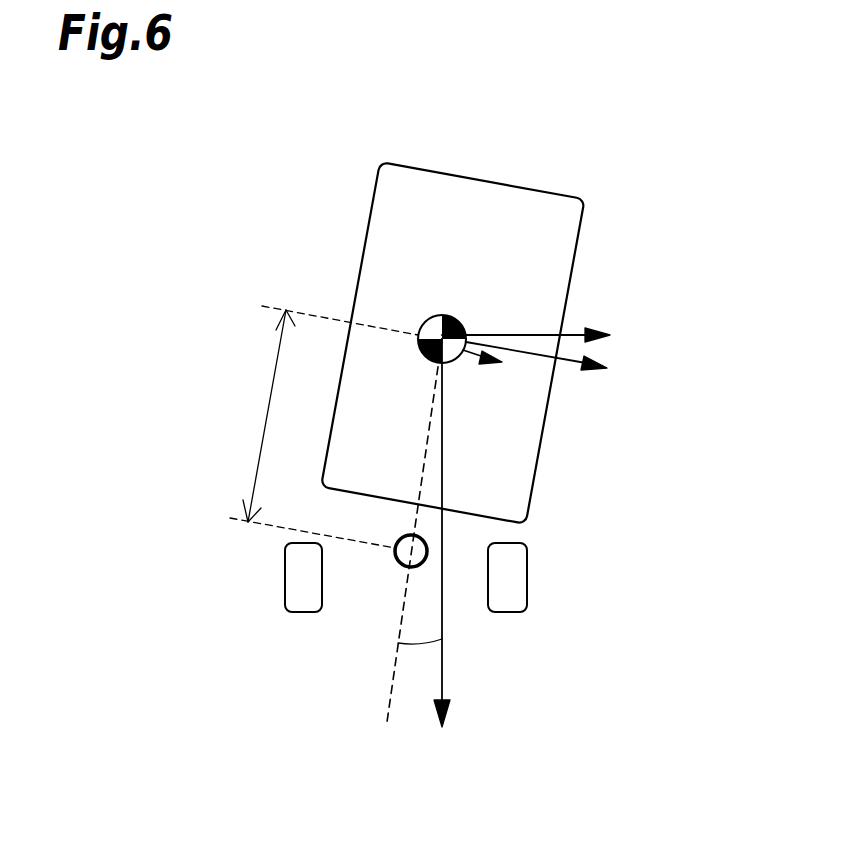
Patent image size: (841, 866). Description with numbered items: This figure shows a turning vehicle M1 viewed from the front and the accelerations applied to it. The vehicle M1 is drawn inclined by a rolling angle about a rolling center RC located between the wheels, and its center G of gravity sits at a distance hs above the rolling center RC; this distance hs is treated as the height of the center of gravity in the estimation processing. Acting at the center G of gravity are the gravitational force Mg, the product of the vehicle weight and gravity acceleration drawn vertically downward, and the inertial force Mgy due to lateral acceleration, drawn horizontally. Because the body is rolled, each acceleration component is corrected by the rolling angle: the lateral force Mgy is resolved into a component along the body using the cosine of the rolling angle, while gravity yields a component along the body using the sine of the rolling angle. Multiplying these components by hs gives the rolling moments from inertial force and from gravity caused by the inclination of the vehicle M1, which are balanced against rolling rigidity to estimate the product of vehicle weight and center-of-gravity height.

The vehicle M1 is at (490, 178).
The center of gravity G is at (436, 315).
The height of the center of gravity hs is at (322, 427).
The rolling center RC is at (400, 566).
The gravitational force Mg is at (443, 574).
The inertial force due to lateral acceleration Mgy is at (513, 334).